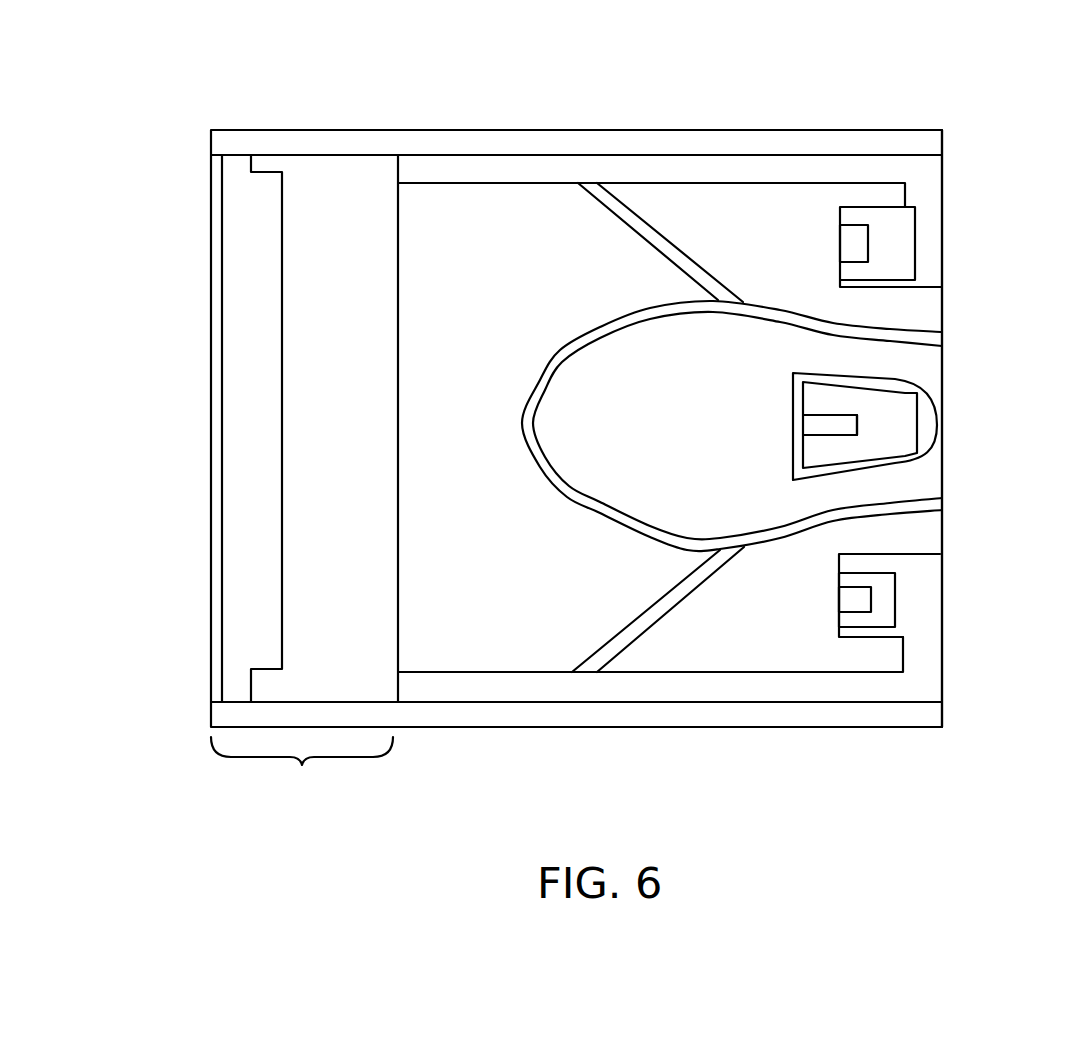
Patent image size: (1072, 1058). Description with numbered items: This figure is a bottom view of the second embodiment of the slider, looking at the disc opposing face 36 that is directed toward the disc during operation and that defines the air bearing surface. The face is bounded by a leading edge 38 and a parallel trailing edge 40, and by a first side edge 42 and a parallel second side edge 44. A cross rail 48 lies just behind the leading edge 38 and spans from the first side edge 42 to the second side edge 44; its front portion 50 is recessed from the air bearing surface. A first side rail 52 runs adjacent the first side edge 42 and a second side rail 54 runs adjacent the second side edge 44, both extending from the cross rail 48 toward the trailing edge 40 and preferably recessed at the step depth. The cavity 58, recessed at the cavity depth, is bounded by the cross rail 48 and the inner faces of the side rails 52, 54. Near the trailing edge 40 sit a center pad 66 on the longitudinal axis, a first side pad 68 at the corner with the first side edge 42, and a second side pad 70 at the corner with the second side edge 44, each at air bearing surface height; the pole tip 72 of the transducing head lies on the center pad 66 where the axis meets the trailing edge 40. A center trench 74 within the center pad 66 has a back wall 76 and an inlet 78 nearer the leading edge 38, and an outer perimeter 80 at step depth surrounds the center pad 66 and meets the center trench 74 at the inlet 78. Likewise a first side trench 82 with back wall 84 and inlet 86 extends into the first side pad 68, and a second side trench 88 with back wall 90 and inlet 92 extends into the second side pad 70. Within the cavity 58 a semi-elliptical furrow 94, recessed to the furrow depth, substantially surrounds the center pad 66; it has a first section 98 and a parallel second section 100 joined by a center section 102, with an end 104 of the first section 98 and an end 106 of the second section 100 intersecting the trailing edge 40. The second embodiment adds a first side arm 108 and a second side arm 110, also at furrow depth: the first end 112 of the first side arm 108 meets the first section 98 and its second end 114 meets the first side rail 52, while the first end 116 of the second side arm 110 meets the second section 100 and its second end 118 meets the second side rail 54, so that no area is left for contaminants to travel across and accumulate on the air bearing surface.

The disc opposing face 36 is at (353, 240).
The leading edge 38 is at (217, 380).
The trailing edge 40 is at (945, 540).
The first side edge 42 is at (432, 128).
The second side edge 44 is at (517, 727).
The cross rail 48 is at (302, 767).
The front portion 50 is at (250, 545).
The first side rail 52 is at (707, 165).
The second side rail 54 is at (693, 688).
The cavity 58 is at (445, 642).
The center pad 66 is at (890, 416).
The first side pad 68 is at (945, 228).
The second side pad 70 is at (880, 604).
The pole tip 72 is at (918, 430).
The center trench 74 is at (830, 425).
The back wall 76 is at (858, 430).
The inlet 78 is at (805, 430).
The outer perimeter 80 is at (818, 478).
The first side trench 82 is at (855, 250).
The back wall 84 is at (893, 250).
The inlet 86 is at (840, 243).
The second side trench 88 is at (853, 602).
The back wall 90 is at (872, 605).
The inlet 92 is at (840, 603).
The furrow 94 is at (560, 350).
The first section 98 is at (750, 308).
The second section 100 is at (765, 530).
The center section 102 is at (523, 432).
The end 104 is at (945, 345).
The end 106 is at (945, 503).
The first side arm 108 is at (622, 222).
The second side arm 110 is at (633, 625).
The first end 112 is at (722, 290).
The second end 114 is at (592, 188).
The first end 116 is at (718, 565).
The second end 118 is at (590, 658).